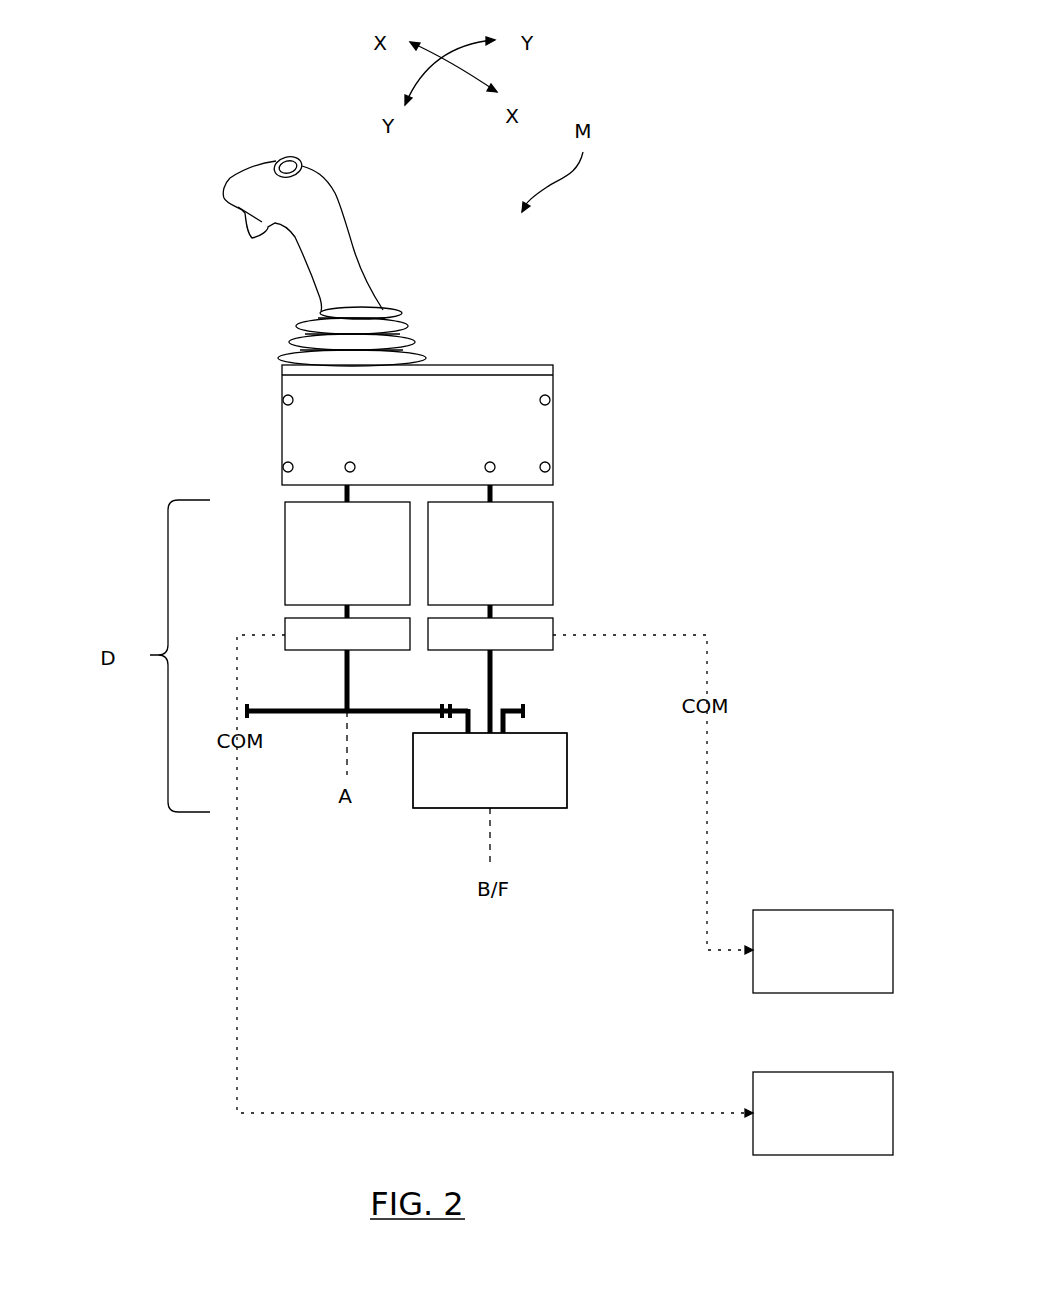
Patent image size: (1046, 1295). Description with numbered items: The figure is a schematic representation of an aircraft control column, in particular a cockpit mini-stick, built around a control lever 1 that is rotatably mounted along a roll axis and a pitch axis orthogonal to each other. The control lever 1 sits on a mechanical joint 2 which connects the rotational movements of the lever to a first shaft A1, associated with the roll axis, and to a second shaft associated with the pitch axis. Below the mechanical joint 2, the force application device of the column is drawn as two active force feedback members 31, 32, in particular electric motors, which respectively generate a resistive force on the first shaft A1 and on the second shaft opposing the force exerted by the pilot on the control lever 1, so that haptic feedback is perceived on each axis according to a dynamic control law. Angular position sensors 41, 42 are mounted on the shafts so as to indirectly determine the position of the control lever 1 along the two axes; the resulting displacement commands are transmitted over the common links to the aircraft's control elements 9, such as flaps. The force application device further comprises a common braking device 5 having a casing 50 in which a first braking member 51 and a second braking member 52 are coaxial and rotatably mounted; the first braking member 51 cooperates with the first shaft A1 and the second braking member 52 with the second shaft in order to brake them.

The control lever 1 is at (247, 187).
The mechanical joint 2 is at (461, 400).
The first active force feedback member 31 is at (335, 565).
The second active force feedback member 32 is at (478, 565).
The first angular position sensor 41 is at (335, 646).
The second angular position sensor 42 is at (478, 646).
The common braking device 5 is at (484, 782).
The casing 50 is at (567, 770).
The first braking member 51 is at (462, 705).
The second braking member 52 is at (493, 692).
The first shaft A1 is at (350, 693).
The control elements 9 is at (817, 962).